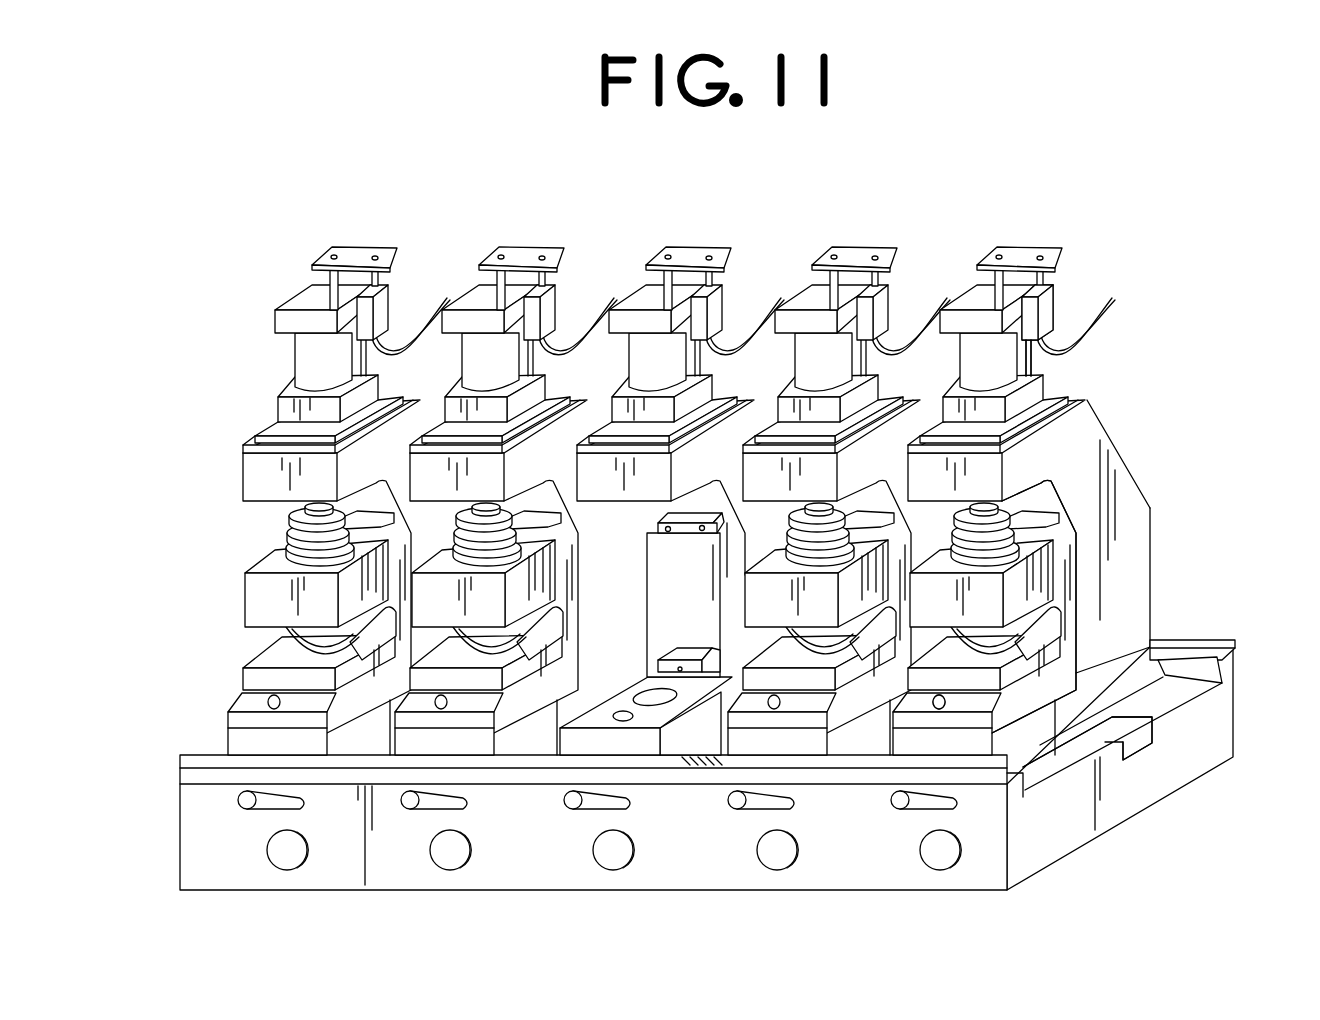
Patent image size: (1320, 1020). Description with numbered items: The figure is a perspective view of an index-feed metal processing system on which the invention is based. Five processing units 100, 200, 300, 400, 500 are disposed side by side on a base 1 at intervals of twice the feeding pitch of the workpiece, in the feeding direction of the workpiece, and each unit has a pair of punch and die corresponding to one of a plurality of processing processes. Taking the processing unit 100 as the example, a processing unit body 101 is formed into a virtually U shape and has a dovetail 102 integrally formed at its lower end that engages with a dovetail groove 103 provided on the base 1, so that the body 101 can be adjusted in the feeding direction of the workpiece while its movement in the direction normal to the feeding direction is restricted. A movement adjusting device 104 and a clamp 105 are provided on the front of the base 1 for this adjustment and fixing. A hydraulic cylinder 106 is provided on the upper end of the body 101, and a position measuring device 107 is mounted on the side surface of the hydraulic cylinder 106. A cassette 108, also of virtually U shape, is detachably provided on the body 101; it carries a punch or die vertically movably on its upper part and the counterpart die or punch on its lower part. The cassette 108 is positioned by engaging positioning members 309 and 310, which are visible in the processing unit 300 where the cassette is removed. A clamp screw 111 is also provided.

The base 1 is at (1043, 848).
The processing unit 100 is at (1034, 230).
The processing unit 200 is at (878, 230).
The processing unit 300 is at (672, 463).
The processing unit 400 is at (547, 230).
The processing unit 500 is at (383, 230).
The processing unit body 101 is at (1120, 535).
The dovetail 102 is at (1160, 680).
The dovetail groove 103 is at (1220, 684).
The movement adjusting device 104 is at (940, 866).
The clamp 105 is at (932, 704).
The hydraulic cylinder 106 is at (1018, 364).
The position measuring device 107 is at (1043, 303).
The cassette 108 is at (1055, 647).
The clamp screw 111 is at (597, 820).
The positioning member 309 is at (658, 528).
The positioning member 310 is at (660, 663).